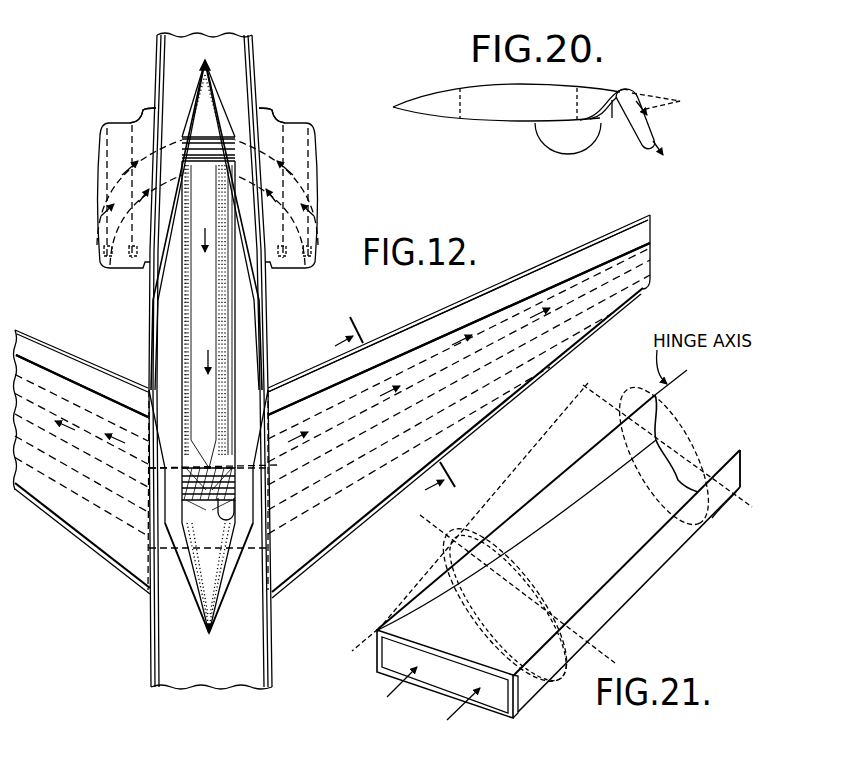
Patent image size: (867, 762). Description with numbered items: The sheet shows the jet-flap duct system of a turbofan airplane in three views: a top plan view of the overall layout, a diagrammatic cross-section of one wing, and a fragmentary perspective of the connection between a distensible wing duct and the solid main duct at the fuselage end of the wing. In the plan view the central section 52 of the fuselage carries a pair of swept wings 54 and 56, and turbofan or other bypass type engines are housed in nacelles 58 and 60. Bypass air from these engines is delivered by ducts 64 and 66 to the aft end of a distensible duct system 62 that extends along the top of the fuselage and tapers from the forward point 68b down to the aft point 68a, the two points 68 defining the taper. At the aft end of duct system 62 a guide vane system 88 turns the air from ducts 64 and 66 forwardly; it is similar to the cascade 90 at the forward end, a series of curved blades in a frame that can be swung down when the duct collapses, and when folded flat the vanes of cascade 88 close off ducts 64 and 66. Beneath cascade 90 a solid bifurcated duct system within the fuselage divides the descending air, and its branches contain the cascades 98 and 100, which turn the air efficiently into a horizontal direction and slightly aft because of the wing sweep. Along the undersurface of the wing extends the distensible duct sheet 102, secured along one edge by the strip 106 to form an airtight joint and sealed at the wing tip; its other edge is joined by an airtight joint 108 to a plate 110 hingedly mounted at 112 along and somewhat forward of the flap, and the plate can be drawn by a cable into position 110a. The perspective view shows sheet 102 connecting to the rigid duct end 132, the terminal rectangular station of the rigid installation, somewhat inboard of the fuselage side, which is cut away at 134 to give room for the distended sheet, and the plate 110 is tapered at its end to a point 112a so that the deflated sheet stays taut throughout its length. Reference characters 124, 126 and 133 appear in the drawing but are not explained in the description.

In FIG. 12, the central section of the fuselage 52 is at (166, 620).
In FIG. 12, the swept wing 54 is at (99, 528).
In FIG. 12, the swept wing 56 is at (344, 516).
In FIG. 20, the swept wing 56 is at (490, 122).
In FIG. 12, the nacelle 58 is at (99, 170).
In FIG. 12, the nacelle 60 is at (314, 160).
In FIG. 12, the distensible duct system 62 is at (193, 313).
In FIG. 12, the duct 64 is at (141, 120).
In FIG. 12, the duct 66 is at (274, 120).
In FIG. 12, the duct point 68 is at (216, 273).
In FIG. 12, the aft point 68a is at (207, 59).
In FIG. 12, the forward point 68b is at (211, 635).
In FIG. 12, the guide vane system 88 is at (186, 147).
In FIG. 12, the cascade 90 is at (237, 517).
In FIG. 12, the cascade 98 is at (184, 486).
In FIG. 12, the cascade 100 is at (228, 463).
In FIG. 20, the distensible duct sheet 102 is at (592, 151).
In FIG. 21, the distensible duct sheet 102 is at (660, 463).
In FIG. 21, the strip 106 is at (722, 462).
In FIG. 21, the airtight joint 108 is at (553, 506).
In FIG. 21, the plate 110 is at (647, 419).
In FIG. 21, the drawn position of plate 110a is at (535, 476).
In FIG. 21, the hinge 112 is at (686, 372).
In FIG. 21, the tapered end point of plate 112a is at (377, 628).
In FIG. 20, the flap hinge 124 is at (617, 94).
In FIG. 12, the trailing edge flap 126 is at (488, 302).
In FIG. 20, the trailing edge flap 126 is at (647, 132).
In FIG. 21, the rectangular duct end section 132 is at (518, 703).
In FIG. 21, the valve disc 133 is at (469, 641).
In FIG. 21, the cut-away fuselage opening 134 is at (552, 686).